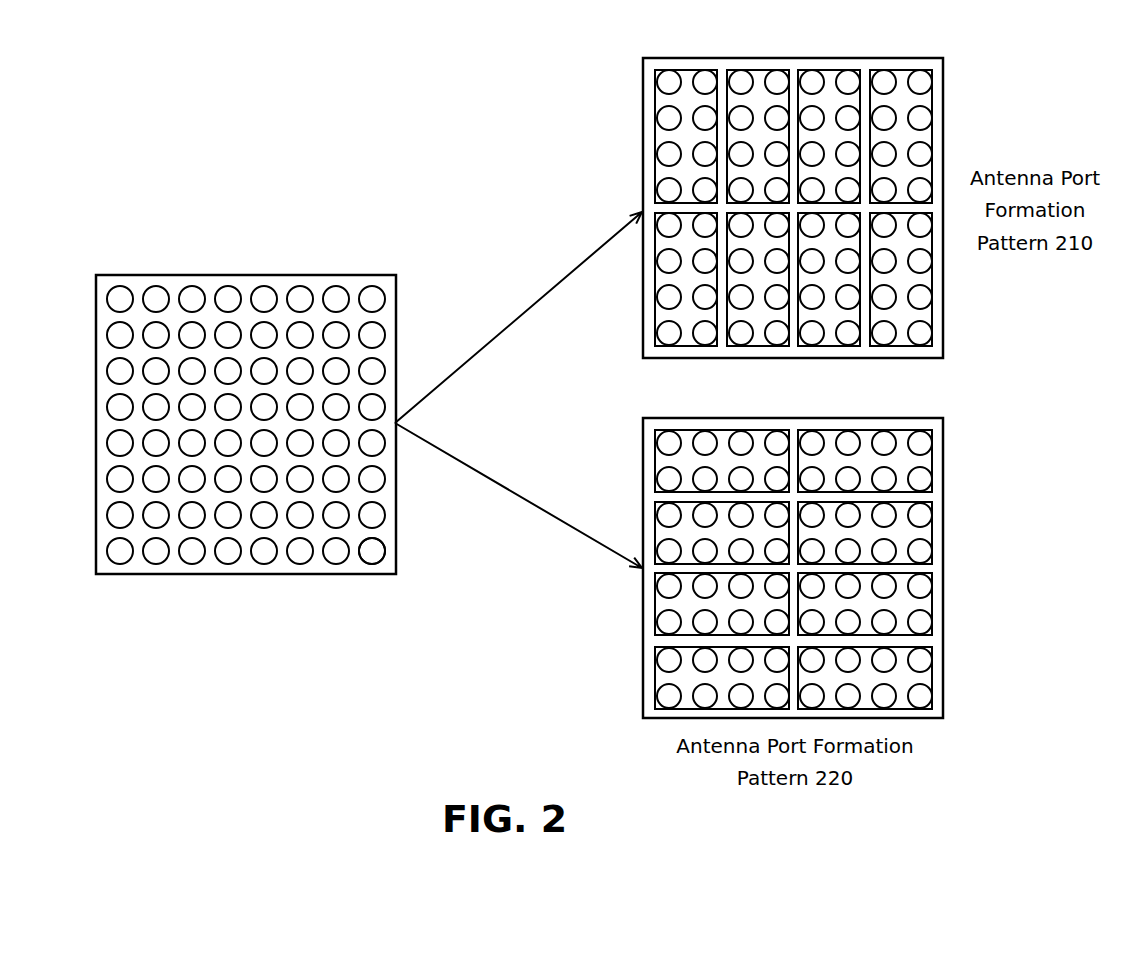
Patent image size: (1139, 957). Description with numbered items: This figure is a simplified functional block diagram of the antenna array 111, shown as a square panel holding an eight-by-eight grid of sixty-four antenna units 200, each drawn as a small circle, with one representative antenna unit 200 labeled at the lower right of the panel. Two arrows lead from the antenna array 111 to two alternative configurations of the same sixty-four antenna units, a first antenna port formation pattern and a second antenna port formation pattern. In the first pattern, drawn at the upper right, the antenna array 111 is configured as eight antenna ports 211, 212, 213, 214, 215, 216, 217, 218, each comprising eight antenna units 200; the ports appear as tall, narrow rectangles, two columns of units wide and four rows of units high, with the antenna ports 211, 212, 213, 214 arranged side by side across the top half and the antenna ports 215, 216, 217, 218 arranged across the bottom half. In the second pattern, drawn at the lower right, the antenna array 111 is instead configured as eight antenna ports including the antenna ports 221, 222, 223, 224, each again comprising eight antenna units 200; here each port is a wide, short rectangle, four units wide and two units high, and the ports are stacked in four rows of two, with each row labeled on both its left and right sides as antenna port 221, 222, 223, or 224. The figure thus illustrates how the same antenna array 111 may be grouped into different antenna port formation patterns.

The antenna array 111 is at (243, 275).
The antenna unit 200 is at (372, 563).
The antenna port 211 is at (655, 135).
The antenna port 212 is at (757, 70).
The antenna port 213 is at (827, 70).
The antenna port 214 is at (932, 135).
The antenna port 215 is at (655, 282).
The antenna port 216 is at (757, 348).
The antenna port 217 is at (827, 348).
The antenna port 218 is at (932, 282).
The antenna port 221 is at (655, 460).
The antenna port 222 is at (655, 533).
The antenna port 223 is at (655, 605).
The antenna port 224 is at (655, 678).